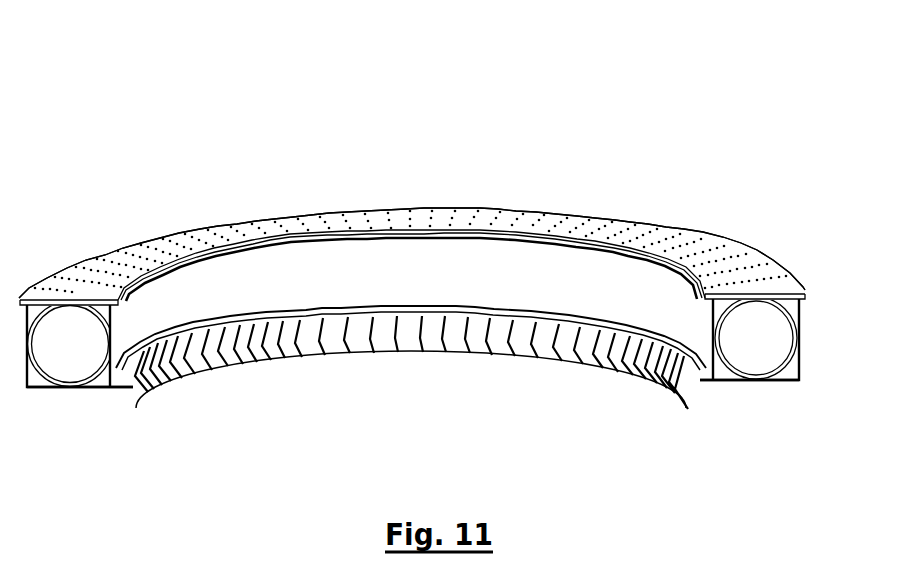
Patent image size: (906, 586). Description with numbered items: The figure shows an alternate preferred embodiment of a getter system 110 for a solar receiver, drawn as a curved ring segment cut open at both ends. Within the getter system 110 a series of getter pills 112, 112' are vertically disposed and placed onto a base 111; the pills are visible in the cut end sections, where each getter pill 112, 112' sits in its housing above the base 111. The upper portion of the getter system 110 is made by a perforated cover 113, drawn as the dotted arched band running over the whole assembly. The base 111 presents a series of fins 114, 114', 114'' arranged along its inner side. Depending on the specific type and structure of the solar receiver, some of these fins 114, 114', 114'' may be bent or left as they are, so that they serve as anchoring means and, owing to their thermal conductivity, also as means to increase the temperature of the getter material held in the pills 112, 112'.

The getter system 110 is at (693, 153).
The base 111 is at (120, 392).
The getter pill 112 is at (75, 403).
The getter pill 112' is at (749, 396).
The perforated cover 113 is at (230, 228).
The fin 114 is at (233, 380).
The fin 114' is at (320, 371).
The fin 114'' is at (435, 370).